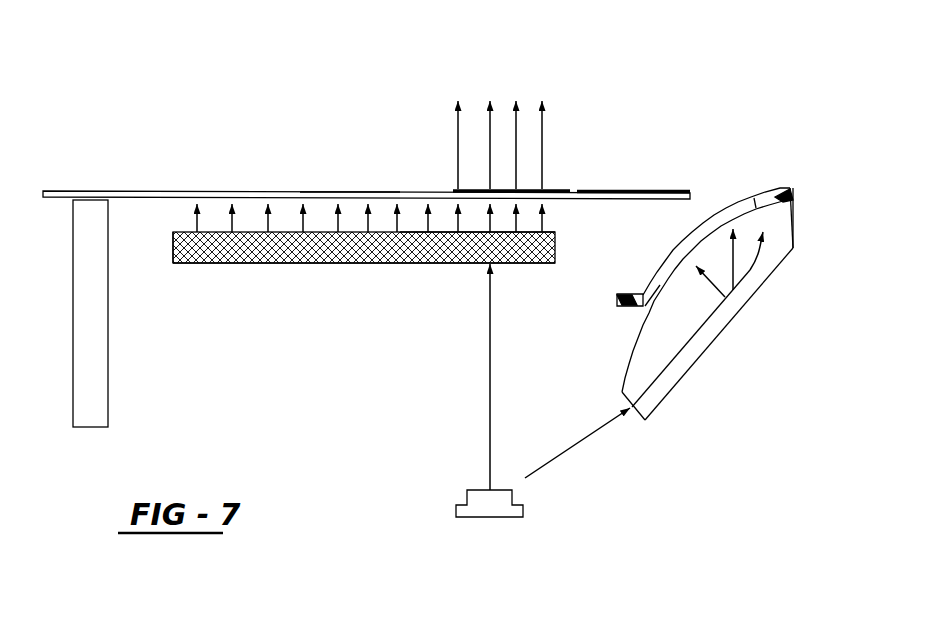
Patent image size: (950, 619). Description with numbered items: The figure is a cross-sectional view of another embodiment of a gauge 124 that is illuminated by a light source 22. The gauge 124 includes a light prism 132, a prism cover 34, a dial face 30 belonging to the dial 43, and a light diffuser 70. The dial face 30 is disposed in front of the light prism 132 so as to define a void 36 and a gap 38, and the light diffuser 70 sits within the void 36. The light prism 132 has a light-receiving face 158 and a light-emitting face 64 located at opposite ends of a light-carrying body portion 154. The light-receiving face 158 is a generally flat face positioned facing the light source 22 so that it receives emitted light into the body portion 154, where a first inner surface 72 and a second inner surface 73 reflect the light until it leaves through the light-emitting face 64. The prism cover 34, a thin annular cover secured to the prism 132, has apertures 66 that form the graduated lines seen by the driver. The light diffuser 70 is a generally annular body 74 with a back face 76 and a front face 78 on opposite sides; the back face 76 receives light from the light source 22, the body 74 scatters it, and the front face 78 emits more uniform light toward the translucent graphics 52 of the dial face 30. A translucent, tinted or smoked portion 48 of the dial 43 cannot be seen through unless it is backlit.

The gauge 124 is at (64, 141).
The dial face 30 is at (250, 190).
The dial 43 is at (355, 191).
The translucent graphics 52 is at (453, 190).
The translucent portion 48 is at (663, 190).
The front face 78 is at (178, 222).
The annular body 74 is at (222, 263).
The light diffuser 70 is at (347, 264).
The back face 76 is at (440, 264).
The void 36 is at (244, 372).
The light source 22 is at (480, 517).
The gap 38 is at (716, 190).
The prism cover 34 is at (786, 187).
The apertures 66 is at (710, 230).
The light-emitting face 64 is at (677, 268).
The second inner surface 73 is at (793, 228).
The light prism 132 is at (737, 318).
The light-carrying body portion 154 is at (715, 343).
The first inner surface 72 is at (636, 346).
The light-receiving face 158 is at (631, 425).